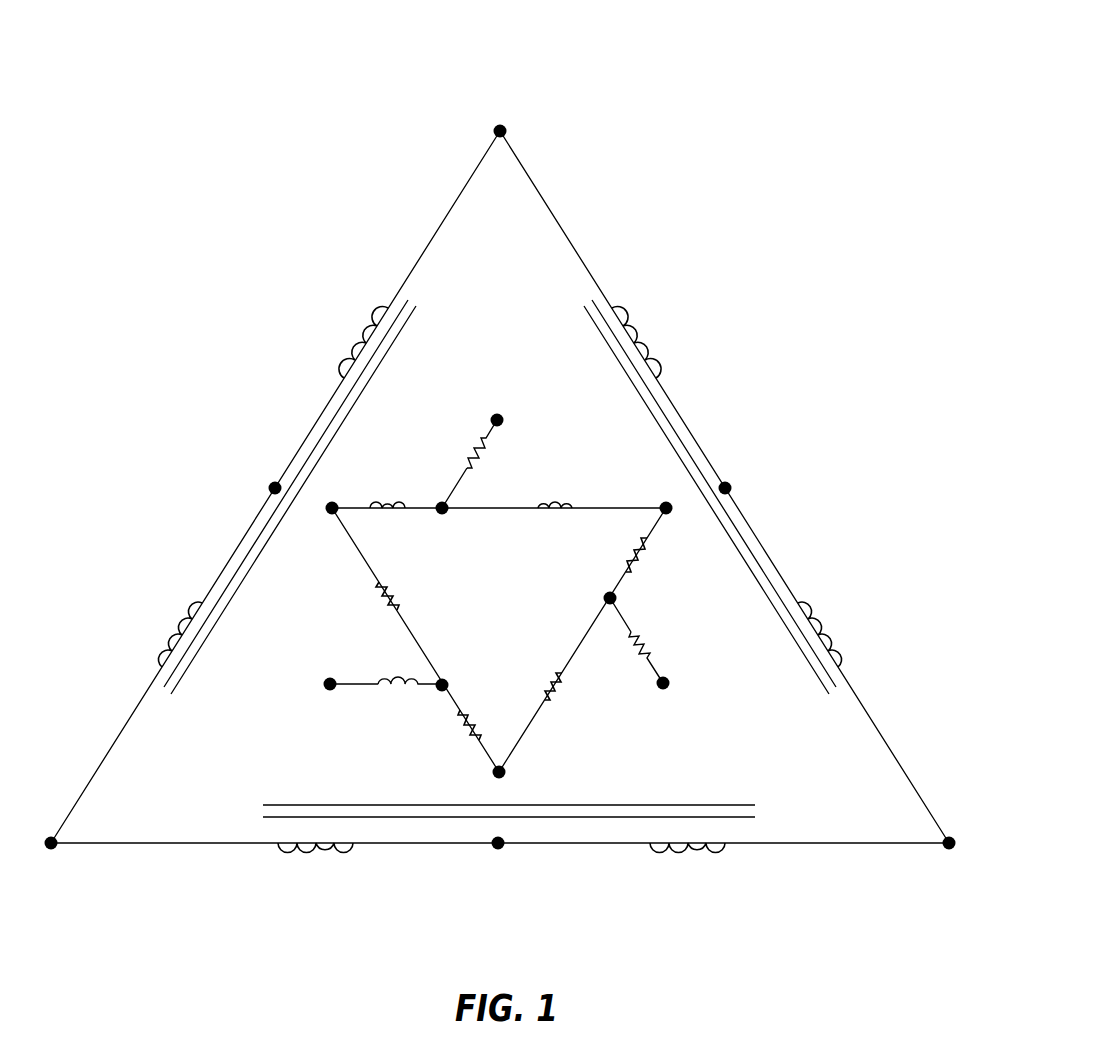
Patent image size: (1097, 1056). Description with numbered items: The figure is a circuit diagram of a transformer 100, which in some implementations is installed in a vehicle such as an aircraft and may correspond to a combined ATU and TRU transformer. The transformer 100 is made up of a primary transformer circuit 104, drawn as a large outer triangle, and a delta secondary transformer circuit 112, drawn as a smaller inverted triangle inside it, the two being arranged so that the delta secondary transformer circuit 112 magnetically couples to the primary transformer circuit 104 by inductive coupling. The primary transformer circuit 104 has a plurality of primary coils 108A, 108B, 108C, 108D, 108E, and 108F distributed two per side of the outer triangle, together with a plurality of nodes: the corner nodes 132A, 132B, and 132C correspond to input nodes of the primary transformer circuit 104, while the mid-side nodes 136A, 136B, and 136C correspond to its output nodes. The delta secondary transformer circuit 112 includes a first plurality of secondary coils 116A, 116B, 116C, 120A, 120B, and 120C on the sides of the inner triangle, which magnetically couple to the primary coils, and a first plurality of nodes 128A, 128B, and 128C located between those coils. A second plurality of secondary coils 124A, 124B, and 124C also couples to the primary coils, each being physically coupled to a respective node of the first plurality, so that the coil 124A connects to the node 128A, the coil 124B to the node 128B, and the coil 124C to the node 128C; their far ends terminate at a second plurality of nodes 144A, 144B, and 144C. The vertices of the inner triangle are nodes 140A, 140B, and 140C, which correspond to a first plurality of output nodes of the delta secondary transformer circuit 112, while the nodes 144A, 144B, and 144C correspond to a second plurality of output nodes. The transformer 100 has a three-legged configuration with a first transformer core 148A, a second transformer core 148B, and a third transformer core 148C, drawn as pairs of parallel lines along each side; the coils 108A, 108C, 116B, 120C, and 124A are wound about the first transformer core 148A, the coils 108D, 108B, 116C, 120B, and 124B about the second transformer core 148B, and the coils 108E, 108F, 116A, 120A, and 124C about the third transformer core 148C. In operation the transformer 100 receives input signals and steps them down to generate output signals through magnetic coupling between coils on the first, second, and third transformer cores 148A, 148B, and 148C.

The transformer 100 is at (745, 50).
The primary transformer circuit 104 is at (428, 224).
The coil 108A is at (384, 309).
The coil 108B is at (617, 310).
The coil 108C is at (198, 606).
The coil 108D is at (804, 607).
The coil 108E is at (350, 850).
The coil 108F is at (654, 850).
The delta secondary transformer circuit 112 is at (488, 386).
The coil 116A is at (366, 502).
The coil 116B is at (636, 573).
The coil 116C is at (475, 742).
The coil 120A is at (565, 502).
The coil 120B is at (373, 587).
The coil 120C is at (550, 700).
The coil 124A is at (475, 440).
The coil 124B is at (656, 660).
The coil 124C is at (382, 678).
The node 128A is at (447, 513).
The node 128B is at (606, 594).
The node 128C is at (448, 681).
The node 132A is at (505, 127).
The node 132B is at (56, 848).
The node 132C is at (944, 848).
The node 136A is at (272, 486).
The node 136B is at (728, 486).
The node 136C is at (496, 849).
The node 140A is at (338, 512).
The node 140B is at (668, 503).
The node 140C is at (505, 772).
The node 144A is at (504, 418).
The node 144B is at (668, 688).
The node 144C is at (328, 690).
The first transformer core 148A is at (185, 696).
The second transformer core 148B is at (820, 696).
The third transformer core 148C is at (272, 805).